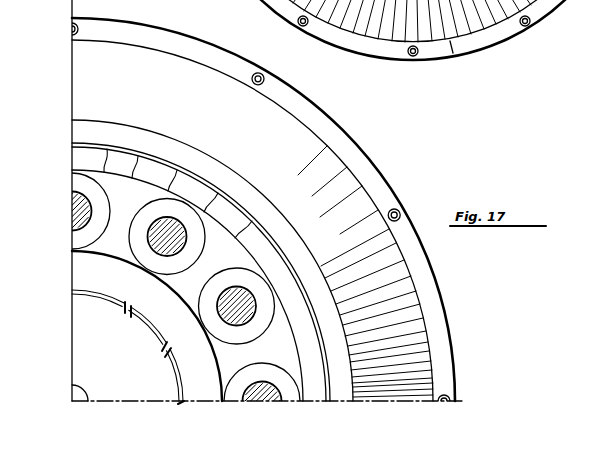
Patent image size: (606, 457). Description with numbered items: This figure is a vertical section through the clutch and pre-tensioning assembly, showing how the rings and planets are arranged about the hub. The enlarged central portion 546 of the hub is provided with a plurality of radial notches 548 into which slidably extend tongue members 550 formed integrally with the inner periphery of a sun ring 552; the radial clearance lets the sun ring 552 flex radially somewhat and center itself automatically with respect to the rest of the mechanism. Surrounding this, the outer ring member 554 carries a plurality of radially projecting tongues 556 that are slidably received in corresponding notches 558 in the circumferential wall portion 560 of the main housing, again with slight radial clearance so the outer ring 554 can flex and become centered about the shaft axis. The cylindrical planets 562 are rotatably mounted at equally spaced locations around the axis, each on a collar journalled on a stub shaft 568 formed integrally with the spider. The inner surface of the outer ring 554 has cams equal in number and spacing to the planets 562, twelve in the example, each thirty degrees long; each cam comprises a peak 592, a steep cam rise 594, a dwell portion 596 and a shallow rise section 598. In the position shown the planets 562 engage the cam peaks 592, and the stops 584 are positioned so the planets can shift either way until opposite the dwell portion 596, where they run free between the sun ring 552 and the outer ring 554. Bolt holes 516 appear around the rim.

The bolt holes 516 is at (80, 26).
The enlarged central portion 546 is at (140, 372).
The radial notches 548 is at (73, 292).
The tongue members 550 is at (127, 307).
The sun ring 552 is at (105, 262).
The outer ring member 554 is at (158, 175).
The radially projecting tongues 556 is at (72, 137).
The notches 558 is at (298, 268).
The circumferential wall portion 560 is at (250, 190).
The planets 562 is at (207, 241).
The stub shaft 568 is at (157, 214).
The stops 584 is at (433, 0).
The peak 592 is at (72, 167).
The steep cam rise 594 is at (198, 163).
The dwell portion 596 is at (141, 156).
The shallow rise section 598 is at (115, 147).